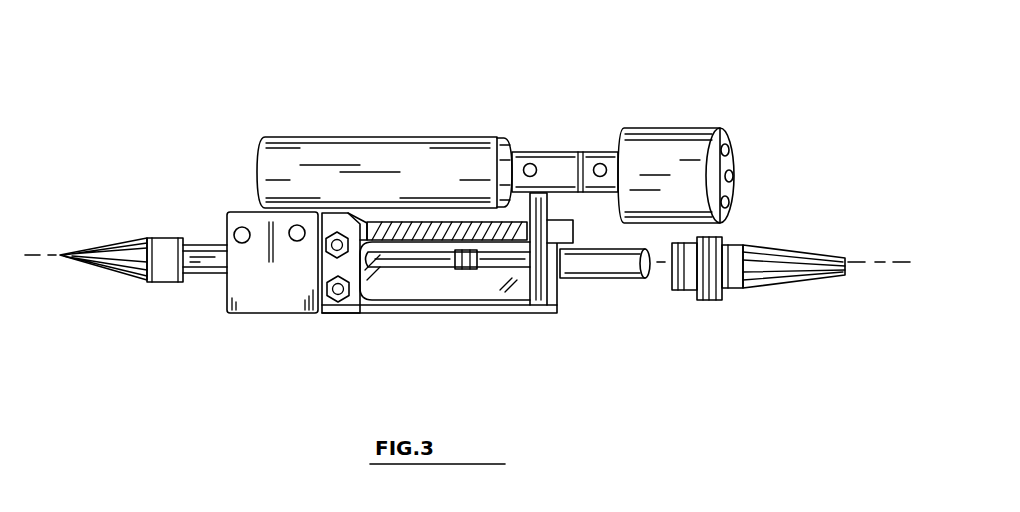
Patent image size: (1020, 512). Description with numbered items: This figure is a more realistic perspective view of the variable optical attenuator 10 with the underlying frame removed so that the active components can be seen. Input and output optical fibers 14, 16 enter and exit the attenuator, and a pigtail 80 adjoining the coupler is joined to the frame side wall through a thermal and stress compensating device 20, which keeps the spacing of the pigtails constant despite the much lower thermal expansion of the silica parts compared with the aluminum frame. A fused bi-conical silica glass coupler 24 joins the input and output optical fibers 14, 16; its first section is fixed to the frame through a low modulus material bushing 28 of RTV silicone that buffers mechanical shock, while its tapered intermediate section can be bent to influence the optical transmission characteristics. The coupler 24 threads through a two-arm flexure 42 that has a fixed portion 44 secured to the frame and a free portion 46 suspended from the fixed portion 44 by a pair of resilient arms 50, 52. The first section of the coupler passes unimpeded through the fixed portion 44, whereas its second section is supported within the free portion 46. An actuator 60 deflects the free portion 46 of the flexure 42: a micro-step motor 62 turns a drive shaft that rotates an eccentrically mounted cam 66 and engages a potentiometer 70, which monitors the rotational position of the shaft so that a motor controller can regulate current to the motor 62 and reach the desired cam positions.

The variable optical attenuator 10 is at (250, 72).
The input optical fiber 14 is at (882, 262).
The output optical fiber 16 is at (50, 255).
The thermal and stress compensating device 20 is at (690, 294).
The fused bi-conical silica glass coupler 24 is at (408, 268).
The low modulus material bushing 28 is at (212, 282).
The two-arm flexure 42 is at (544, 312).
The fixed portion 44 is at (339, 300).
The free portion 46 is at (572, 288).
The resilient arm 50 is at (464, 270).
The resilient arm 52 is at (497, 304).
The actuator 60 is at (421, 133).
The micro-step motor 62 is at (273, 173).
The eccentrically mounted cam 66 is at (557, 133).
The potentiometer 70 is at (667, 128).
The pigtail 80 is at (663, 268).